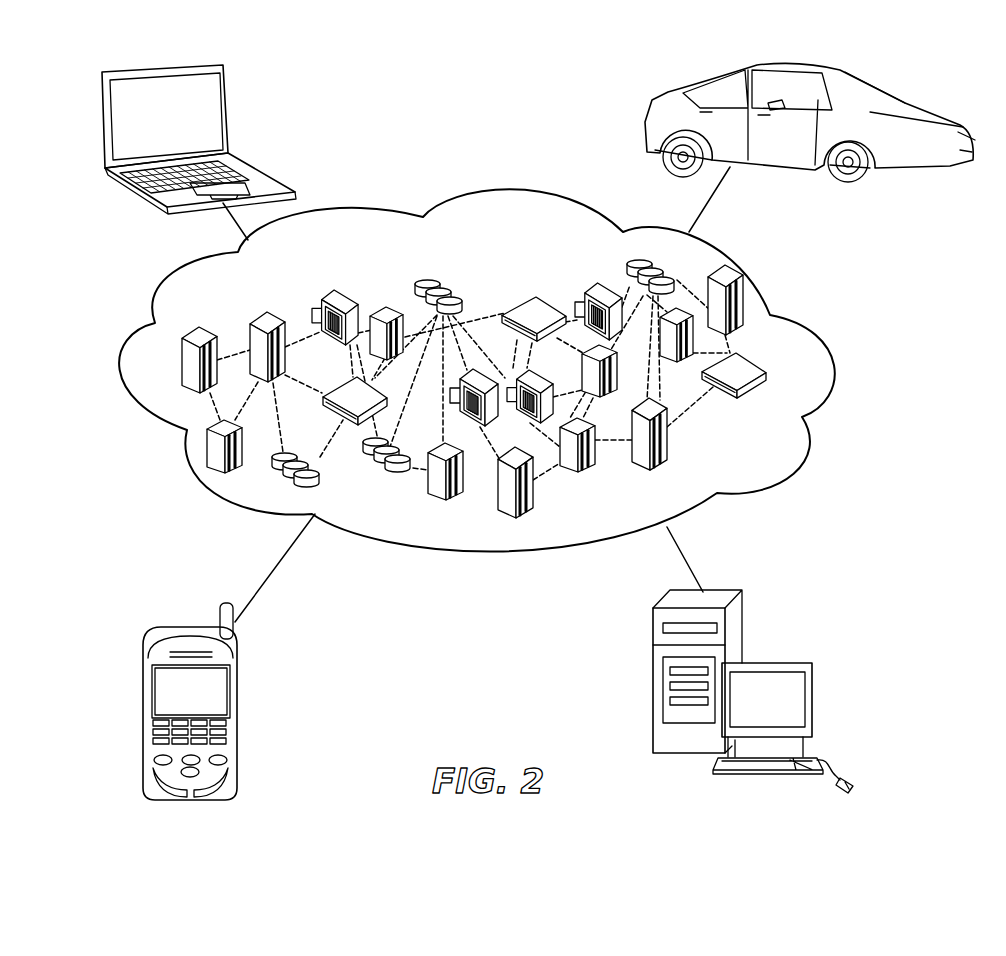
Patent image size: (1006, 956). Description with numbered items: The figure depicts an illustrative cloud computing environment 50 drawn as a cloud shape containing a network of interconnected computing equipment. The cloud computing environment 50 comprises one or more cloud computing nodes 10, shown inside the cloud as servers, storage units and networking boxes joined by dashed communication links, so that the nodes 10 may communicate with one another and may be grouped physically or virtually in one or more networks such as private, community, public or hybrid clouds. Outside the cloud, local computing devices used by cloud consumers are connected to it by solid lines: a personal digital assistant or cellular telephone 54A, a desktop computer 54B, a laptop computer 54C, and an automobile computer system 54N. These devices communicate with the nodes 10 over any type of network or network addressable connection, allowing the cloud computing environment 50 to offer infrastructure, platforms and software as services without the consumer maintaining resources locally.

The cloud computing nodes 10 is at (796, 402).
The cloud computing environment 50 is at (842, 363).
The personal digital assistant (PDA) or cellular telephone 54A is at (227, 690).
The desktop computer 54B is at (653, 697).
The laptop computer 54C is at (223, 128).
The automobile computer system 54N is at (652, 127).